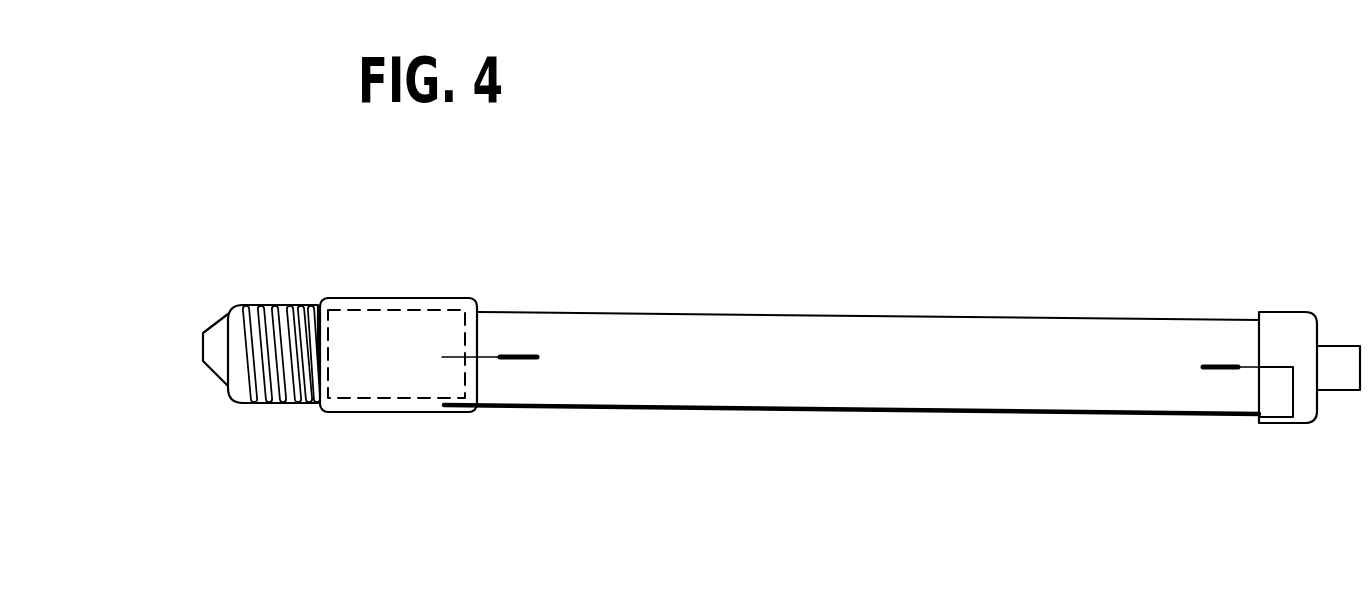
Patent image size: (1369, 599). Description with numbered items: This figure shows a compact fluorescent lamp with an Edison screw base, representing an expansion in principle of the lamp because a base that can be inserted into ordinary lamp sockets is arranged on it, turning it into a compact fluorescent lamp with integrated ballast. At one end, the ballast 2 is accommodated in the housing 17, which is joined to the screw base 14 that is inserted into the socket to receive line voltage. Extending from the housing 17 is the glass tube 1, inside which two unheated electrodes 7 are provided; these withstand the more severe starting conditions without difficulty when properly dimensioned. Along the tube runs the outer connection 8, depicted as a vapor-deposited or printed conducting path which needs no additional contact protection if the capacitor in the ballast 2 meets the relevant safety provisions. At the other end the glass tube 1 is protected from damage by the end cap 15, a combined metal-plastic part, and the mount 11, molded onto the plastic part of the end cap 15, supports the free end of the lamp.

The glass tube 1 is at (910, 380).
The ballast 2 is at (372, 385).
The unheated electrodes 7 is at (537, 357).
The outer connection 8 is at (1068, 415).
The mount 11 is at (1335, 370).
The screw base 14 is at (257, 397).
The end cap 15 is at (1290, 332).
The housing 17 is at (403, 413).